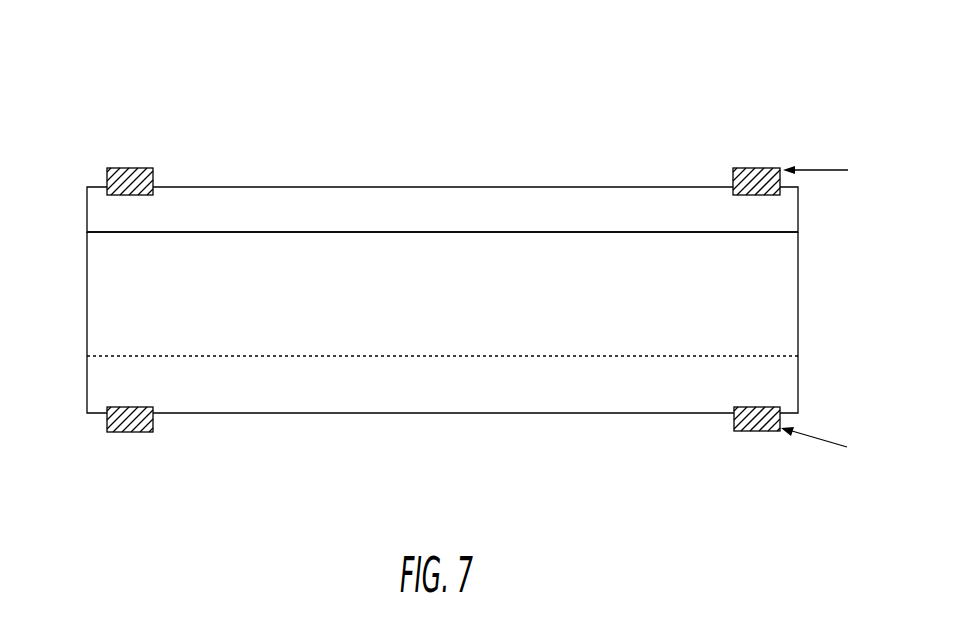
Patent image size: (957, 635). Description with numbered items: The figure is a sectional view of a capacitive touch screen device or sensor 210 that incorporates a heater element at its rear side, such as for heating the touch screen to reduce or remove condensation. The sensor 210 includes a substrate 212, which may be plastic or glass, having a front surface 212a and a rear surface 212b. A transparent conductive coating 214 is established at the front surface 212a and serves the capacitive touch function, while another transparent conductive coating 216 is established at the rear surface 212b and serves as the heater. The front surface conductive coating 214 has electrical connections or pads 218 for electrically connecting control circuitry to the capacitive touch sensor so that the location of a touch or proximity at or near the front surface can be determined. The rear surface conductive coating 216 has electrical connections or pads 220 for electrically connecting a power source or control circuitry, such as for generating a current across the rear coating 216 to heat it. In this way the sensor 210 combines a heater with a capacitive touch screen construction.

The capacitive touch screen device or sensor 210 is at (471, 96).
The substrate 212 is at (107, 298).
The front surface 212a is at (621, 232).
The rear surface 212b is at (598, 357).
The transparent conductive coating 214 is at (246, 205).
The transparent conductive coating 216 is at (268, 400).
The electrical connections or pads 218 is at (125, 168).
The electrical connections or pads 220 is at (122, 432).